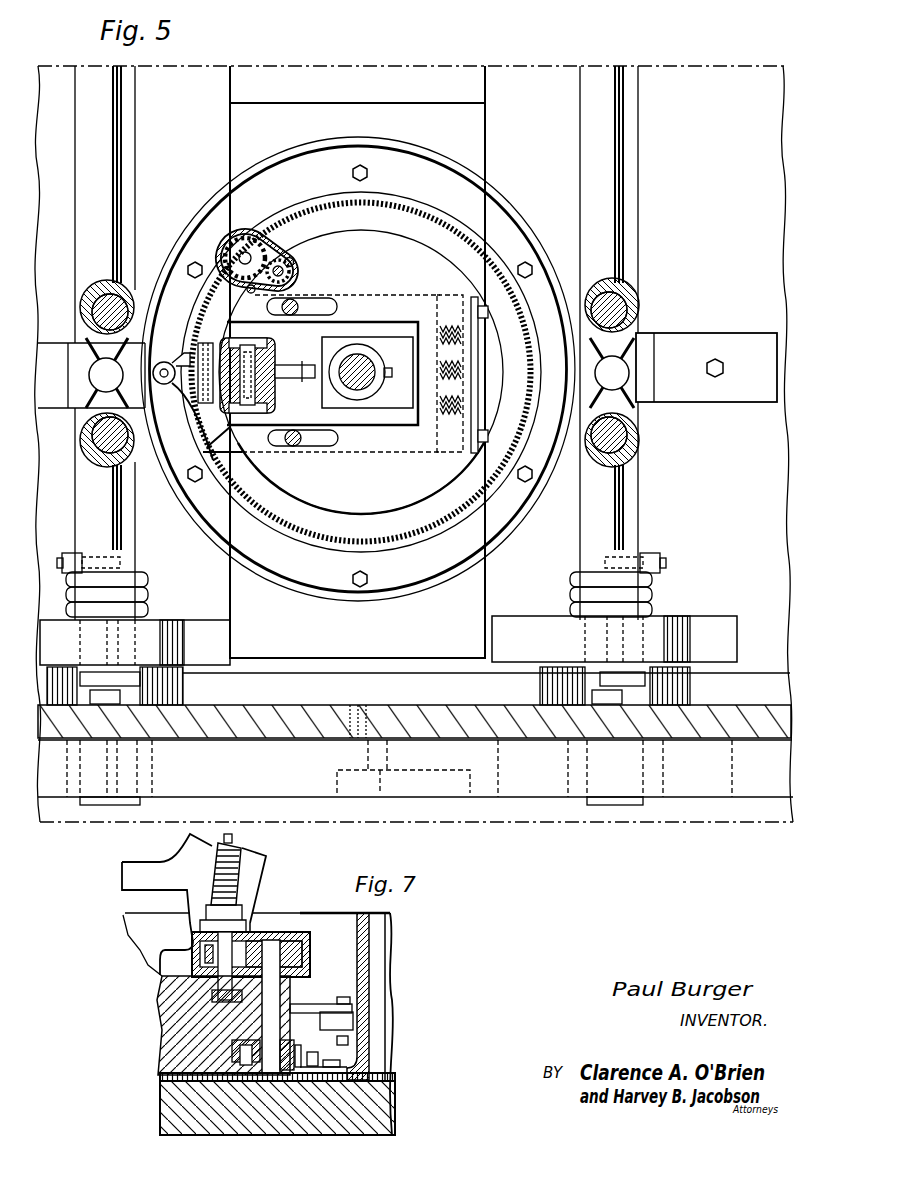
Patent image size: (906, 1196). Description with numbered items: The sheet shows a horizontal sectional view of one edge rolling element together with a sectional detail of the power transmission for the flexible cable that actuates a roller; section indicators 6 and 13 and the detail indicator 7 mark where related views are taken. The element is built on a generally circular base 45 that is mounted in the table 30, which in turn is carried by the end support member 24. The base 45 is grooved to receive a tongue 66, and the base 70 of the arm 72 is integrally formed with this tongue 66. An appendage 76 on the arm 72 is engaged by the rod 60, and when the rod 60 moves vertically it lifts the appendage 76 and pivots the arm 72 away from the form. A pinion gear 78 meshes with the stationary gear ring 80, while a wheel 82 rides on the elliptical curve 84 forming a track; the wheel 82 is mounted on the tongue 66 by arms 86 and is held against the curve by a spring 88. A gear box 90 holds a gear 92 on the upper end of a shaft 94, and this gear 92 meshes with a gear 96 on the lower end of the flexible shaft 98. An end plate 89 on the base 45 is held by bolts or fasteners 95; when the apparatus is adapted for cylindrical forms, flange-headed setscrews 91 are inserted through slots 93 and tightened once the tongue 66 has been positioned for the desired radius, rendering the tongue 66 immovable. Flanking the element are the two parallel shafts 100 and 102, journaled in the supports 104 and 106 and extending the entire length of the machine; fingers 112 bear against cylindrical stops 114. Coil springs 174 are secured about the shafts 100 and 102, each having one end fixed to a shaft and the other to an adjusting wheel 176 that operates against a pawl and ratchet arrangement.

In FIG. 5, the section line 6- 6 is at (357, 150).
In FIG. 5, the section line 7- 7 is at (171, 236).
In FIG. 5, the section line 13- 13 is at (612, 548).
In FIG. 5, the end support member 24 is at (223, 720).
In FIG. 7, the table 30 is at (175, 1105).
In FIG. 5, the circular base 45 is at (361, 372).
In FIG. 5, the rod 60 is at (376, 382).
In FIG. 5, the tongue 66 is at (256, 381).
In FIG. 7, the base of the arm 70 is at (165, 990).
In FIG. 7, the arm 72 is at (247, 897).
In FIG. 7, the appendage 76 is at (135, 873).
In FIG. 7, the pinion gear 78 is at (285, 1081).
In FIG. 5, the stationary gear ring 80 is at (285, 537).
In FIG. 7, the stationary gear ring 80 is at (305, 1080).
In FIG. 5, the wheel 82 is at (163, 384).
In FIG. 7, the wheel 82 is at (350, 1022).
In FIG. 5, the elliptical curve 84 is at (198, 527).
In FIG. 7, the elliptical curve 84 is at (363, 1047).
In FIG. 5, the arms 86 is at (173, 360).
In FIG. 5, the spring 88 is at (458, 345).
In FIG. 5, the end plate 89 is at (480, 380).
In FIG. 5, the gear box 90 is at (262, 229).
In FIG. 7, the gear box 90 is at (262, 932).
In FIG. 5, the flange-headed setscrews 91 is at (293, 460).
In FIG. 5, the gear 92 is at (244, 252).
In FIG. 7, the gear 92 is at (282, 962).
In FIG. 5, the slots 93 is at (322, 460).
In FIG. 5, the shaft 94 is at (240, 257).
In FIG. 7, the shaft 94 is at (272, 992).
In FIG. 5, the bolts or fasteners 95 is at (505, 416).
In FIG. 5, the gear 96 is at (284, 262).
In FIG. 5, the flexible shaft 98 is at (292, 262).
In FIG. 7, the flexible shaft 98 is at (234, 878).
In FIG. 5, the shaft 100 is at (123, 165).
In FIG. 5, the shaft 102 is at (620, 213).
In FIG. 5, the support 104 is at (80, 395).
In FIG. 5, the support 106 is at (648, 382).
In FIG. 5, the fingers 112 is at (118, 345).
In FIG. 5, the cylindrical stops 114 is at (100, 377).
In FIG. 5, the coil springs 174 is at (149, 582).
In FIG. 5, the adjusting wheels 176 is at (170, 625).